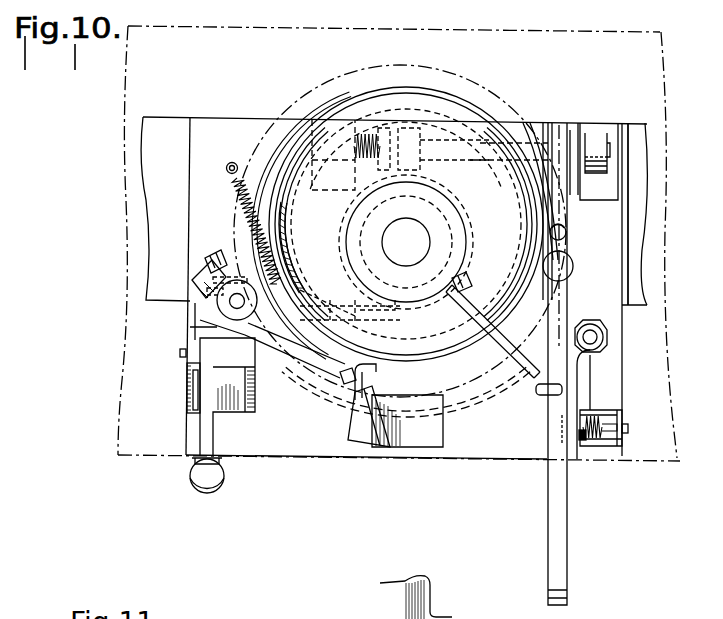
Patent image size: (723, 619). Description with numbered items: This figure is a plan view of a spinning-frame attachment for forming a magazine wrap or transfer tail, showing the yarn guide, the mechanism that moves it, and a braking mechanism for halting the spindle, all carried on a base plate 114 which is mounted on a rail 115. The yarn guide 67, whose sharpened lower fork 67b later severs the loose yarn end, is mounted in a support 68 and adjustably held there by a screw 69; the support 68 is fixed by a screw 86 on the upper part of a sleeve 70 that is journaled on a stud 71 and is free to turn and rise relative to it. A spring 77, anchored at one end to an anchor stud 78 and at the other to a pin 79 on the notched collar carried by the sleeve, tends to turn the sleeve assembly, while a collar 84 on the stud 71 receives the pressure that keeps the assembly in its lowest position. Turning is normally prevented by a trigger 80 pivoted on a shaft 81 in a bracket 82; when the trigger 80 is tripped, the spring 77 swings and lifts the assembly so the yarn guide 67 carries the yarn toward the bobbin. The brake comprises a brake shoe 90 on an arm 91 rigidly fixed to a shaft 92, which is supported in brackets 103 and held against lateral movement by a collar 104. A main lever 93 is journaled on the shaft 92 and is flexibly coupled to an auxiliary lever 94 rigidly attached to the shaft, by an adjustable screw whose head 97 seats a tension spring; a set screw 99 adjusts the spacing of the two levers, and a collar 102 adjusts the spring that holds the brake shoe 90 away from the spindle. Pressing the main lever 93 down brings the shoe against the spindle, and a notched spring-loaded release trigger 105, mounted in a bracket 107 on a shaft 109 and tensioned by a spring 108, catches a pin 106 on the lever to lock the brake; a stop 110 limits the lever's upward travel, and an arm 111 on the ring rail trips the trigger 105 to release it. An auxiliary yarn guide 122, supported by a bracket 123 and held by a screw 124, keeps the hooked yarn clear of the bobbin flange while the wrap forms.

The yarn guide 67 is at (362, 366).
The lower fork 67b is at (468, 282).
The support 68 is at (325, 305).
The screw 69 is at (355, 310).
The sleeve 70 is at (231, 302).
The stud 71 is at (212, 305).
The spring 77 is at (230, 178).
The anchor stud 78 is at (229, 163).
The pin 79 is at (285, 297).
The trigger 80 is at (207, 428).
The shaft 81 is at (180, 353).
The bracket 82 is at (193, 380).
The collar 84 is at (223, 288).
The screw 86 is at (213, 256).
The brake shoe 90 is at (470, 196).
The arm 91 is at (420, 152).
The shaft 92 is at (532, 140).
The main lever 93 is at (565, 509).
The auxiliary lever 94 is at (567, 208).
The head 97 is at (571, 266).
The set screw 99 is at (567, 236).
The collar 102 is at (387, 125).
The brackets 103 is at (352, 127).
The collar 104 is at (598, 138).
The release trigger 105 is at (578, 377).
The pin 106 is at (585, 441).
The bracket 107 is at (623, 442).
The spring 108 is at (595, 417).
The shaft 109 is at (629, 428).
The stop 110 is at (540, 392).
The arm 111 is at (603, 337).
The base plate 114 is at (618, 278).
The rail 115 is at (642, 243).
The auxiliary yarn guide 122 is at (472, 352).
The bracket 123 is at (358, 400).
The screw 124 is at (350, 376).